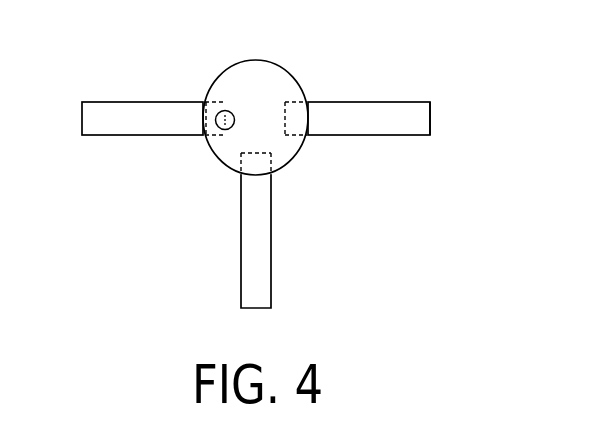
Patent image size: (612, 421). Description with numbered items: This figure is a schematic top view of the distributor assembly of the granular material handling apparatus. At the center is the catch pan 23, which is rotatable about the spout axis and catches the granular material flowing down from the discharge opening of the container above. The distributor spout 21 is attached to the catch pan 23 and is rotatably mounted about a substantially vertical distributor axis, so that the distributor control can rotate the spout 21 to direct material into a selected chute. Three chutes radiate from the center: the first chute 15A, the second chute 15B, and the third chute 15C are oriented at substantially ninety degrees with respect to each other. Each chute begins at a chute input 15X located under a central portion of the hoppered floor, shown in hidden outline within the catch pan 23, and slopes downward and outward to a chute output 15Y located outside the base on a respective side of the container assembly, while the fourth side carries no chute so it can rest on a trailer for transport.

The first chute 15A is at (145, 102).
The second chute 15B is at (241, 240).
The third chute 15C is at (365, 102).
The chute input 15X is at (290, 135).
The chute output 15Y is at (432, 117).
The distributor spout 21 is at (228, 110).
The catch pan 23 is at (288, 73).